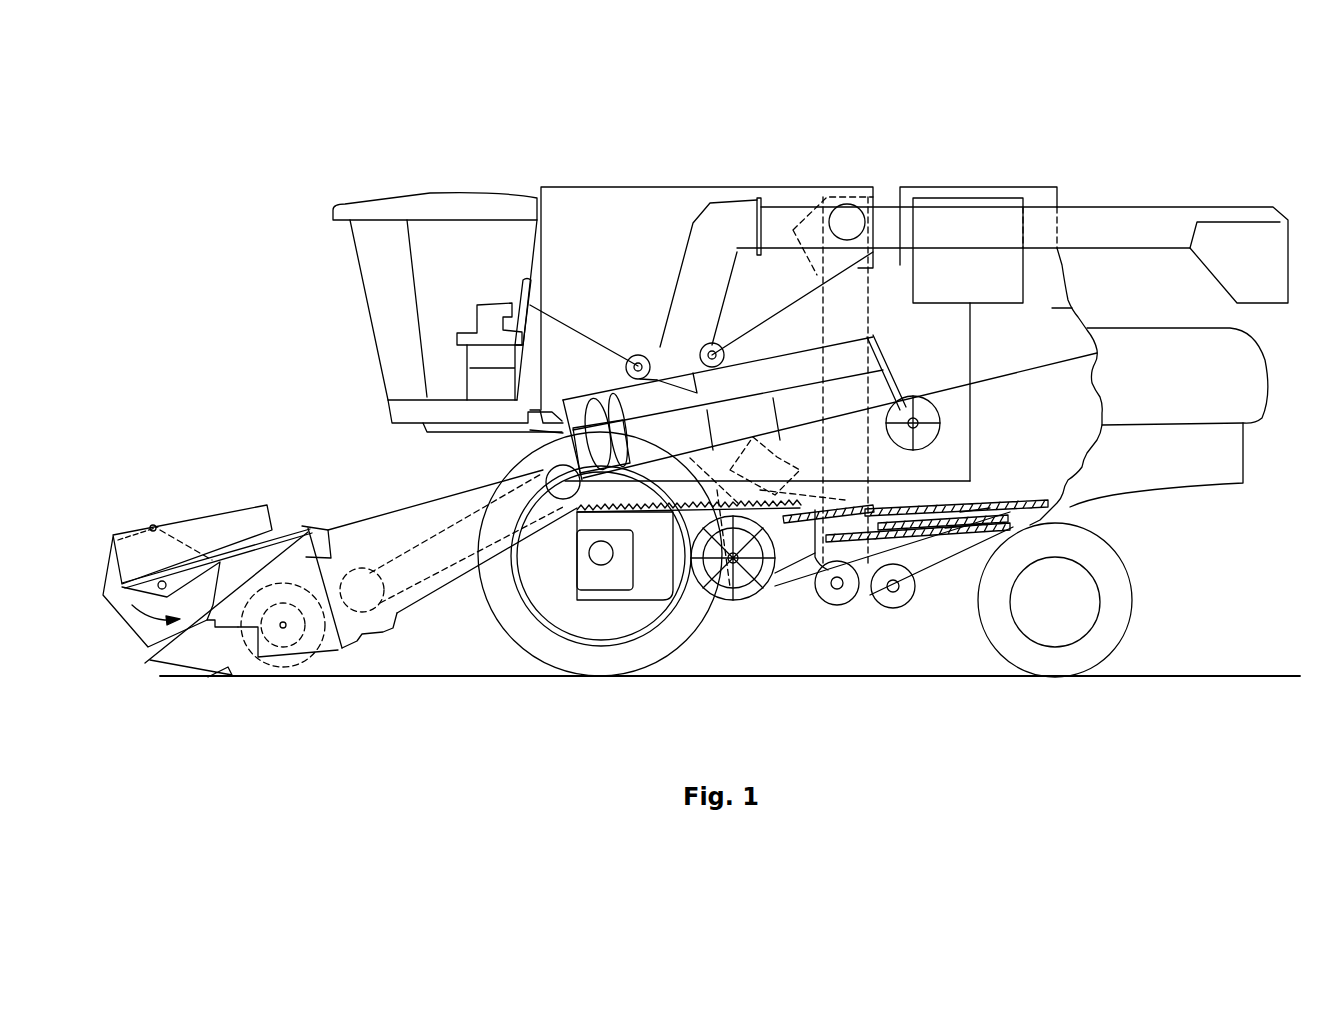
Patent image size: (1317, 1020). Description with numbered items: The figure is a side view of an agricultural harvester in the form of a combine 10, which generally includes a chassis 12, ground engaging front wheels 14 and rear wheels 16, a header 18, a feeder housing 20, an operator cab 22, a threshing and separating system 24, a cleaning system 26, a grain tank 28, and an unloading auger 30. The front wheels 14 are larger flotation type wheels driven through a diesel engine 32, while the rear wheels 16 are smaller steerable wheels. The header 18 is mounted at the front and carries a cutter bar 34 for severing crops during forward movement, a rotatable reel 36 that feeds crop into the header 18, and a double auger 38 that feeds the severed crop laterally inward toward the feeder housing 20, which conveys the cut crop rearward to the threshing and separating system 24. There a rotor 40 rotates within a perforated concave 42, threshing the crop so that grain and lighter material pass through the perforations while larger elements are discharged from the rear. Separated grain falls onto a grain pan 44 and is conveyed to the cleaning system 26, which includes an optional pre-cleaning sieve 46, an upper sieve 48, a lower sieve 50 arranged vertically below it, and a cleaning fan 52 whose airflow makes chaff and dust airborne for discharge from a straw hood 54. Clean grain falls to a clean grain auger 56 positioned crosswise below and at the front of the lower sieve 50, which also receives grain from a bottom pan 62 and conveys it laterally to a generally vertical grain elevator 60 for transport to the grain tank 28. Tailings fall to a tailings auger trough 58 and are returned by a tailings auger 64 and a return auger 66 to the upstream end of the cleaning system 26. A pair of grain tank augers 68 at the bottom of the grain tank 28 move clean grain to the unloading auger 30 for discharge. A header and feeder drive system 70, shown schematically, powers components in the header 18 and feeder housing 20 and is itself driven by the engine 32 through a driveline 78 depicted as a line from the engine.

The combine 10 is at (426, 170).
The chassis 12 is at (1067, 515).
The front wheels 14 is at (507, 636).
The rear wheels 16 is at (1130, 613).
The header 18 is at (195, 497).
The feeder housing 20 is at (402, 510).
The operator cab 22 is at (360, 285).
The threshing and separating system 24 is at (505, 447).
The cleaning system 26 is at (787, 612).
The grain tank 28 is at (592, 190).
The unloading auger 30 is at (1145, 210).
The diesel engine 32 is at (960, 187).
The cutter bar 34 is at (210, 674).
The reel 36 is at (108, 573).
The double auger 38 is at (283, 648).
The rotor 40 is at (585, 400).
The concave 42 is at (767, 384).
The grain pan 44 is at (573, 523).
The pre-cleaning sieve 46 is at (868, 492).
The upper sieve 48 is at (986, 495).
The lower sieve 50 is at (937, 535).
The cleaning fan 52 is at (728, 600).
The straw hood 54 is at (1253, 372).
The clean grain auger 56 is at (840, 605).
The tailings auger trough 58 is at (967, 517).
The grain elevator 60 is at (867, 317).
The bottom pan 62 is at (947, 527).
The tailings auger 64 is at (890, 608).
The return auger 66 is at (790, 467).
The grain tank augers 68 is at (638, 354).
The header and feeder drive system 70 is at (379, 634).
The driveline 78 is at (970, 340).